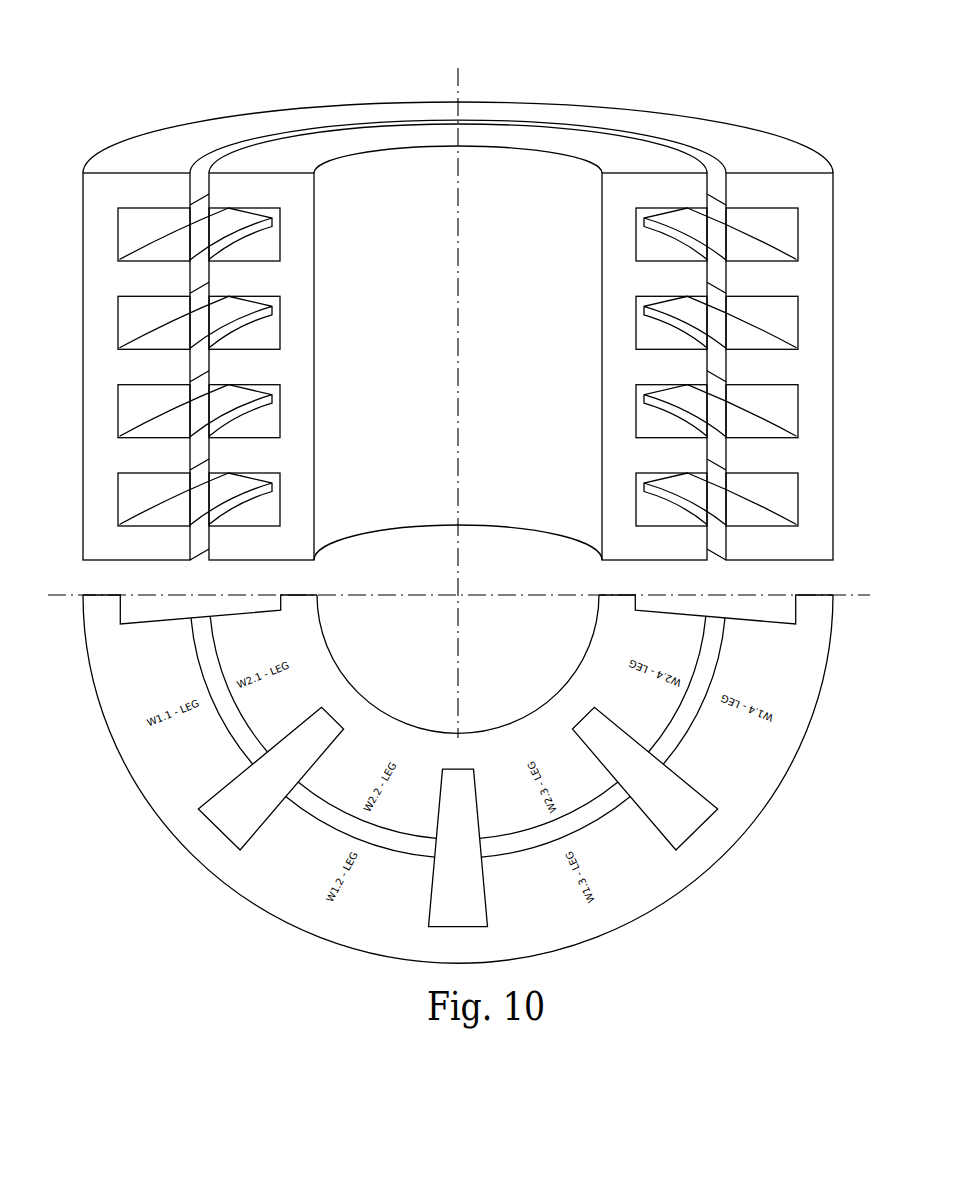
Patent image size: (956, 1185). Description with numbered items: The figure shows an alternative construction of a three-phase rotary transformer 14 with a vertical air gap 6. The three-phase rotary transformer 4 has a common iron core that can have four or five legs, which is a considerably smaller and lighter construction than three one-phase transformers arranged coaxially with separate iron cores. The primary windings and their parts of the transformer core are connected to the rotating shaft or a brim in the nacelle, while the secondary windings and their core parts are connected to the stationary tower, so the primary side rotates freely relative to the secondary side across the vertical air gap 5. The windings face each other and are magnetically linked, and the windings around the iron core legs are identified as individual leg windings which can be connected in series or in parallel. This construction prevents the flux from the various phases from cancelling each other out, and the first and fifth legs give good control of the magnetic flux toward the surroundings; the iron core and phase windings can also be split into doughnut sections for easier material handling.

The three-phase rotary transformer 14 is at (769, 118).
The air gap 6 is at (612, 124).
The vertical air gap 5 is at (654, 366).
The three-phase rotary transformer 4 is at (779, 366).